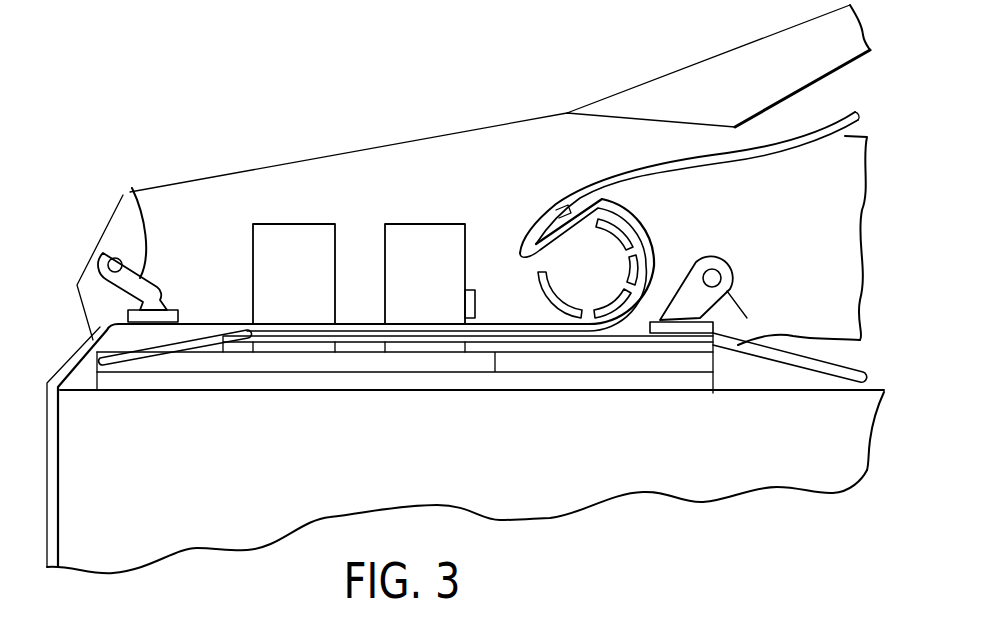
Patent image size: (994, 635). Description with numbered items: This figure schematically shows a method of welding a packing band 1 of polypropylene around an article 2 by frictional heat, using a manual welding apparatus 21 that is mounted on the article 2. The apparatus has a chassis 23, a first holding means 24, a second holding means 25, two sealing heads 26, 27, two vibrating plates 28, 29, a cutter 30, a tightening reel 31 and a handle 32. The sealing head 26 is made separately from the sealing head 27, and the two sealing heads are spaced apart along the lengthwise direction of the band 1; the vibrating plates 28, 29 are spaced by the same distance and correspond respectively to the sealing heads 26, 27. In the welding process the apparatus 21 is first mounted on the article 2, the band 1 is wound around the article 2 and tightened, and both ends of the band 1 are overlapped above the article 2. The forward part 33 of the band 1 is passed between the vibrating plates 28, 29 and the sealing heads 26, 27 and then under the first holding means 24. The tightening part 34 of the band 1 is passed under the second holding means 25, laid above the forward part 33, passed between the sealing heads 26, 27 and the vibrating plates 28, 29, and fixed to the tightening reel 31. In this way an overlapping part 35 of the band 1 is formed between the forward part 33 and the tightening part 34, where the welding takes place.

The packing band 1 is at (838, 377).
The article to be packed 2 is at (140, 541).
The manual welding apparatus 21 is at (202, 205).
The chassis 23 is at (652, 384).
The first holding means 24 is at (737, 302).
The second holding means 25 is at (132, 192).
The sealing head 26 is at (310, 235).
The sealing head 27 is at (413, 233).
The vibrating plate 28 is at (298, 348).
The vibrating plate 29 is at (430, 344).
The cutter 30 is at (478, 300).
The tightening reel 31 is at (552, 214).
The handle 32 is at (748, 63).
The forward part 33 is at (207, 352).
The tightening part 34 is at (552, 337).
The overlapping part 35 is at (368, 340).